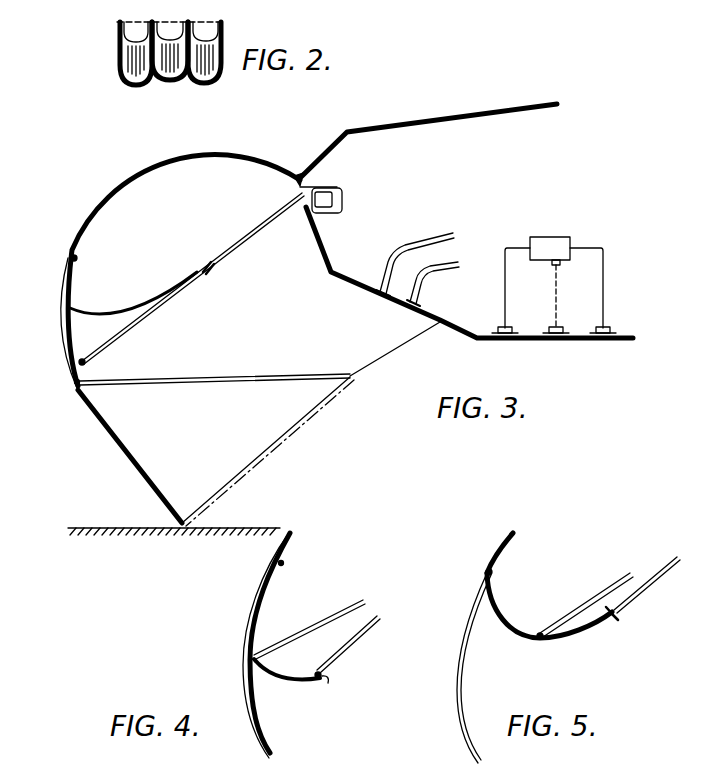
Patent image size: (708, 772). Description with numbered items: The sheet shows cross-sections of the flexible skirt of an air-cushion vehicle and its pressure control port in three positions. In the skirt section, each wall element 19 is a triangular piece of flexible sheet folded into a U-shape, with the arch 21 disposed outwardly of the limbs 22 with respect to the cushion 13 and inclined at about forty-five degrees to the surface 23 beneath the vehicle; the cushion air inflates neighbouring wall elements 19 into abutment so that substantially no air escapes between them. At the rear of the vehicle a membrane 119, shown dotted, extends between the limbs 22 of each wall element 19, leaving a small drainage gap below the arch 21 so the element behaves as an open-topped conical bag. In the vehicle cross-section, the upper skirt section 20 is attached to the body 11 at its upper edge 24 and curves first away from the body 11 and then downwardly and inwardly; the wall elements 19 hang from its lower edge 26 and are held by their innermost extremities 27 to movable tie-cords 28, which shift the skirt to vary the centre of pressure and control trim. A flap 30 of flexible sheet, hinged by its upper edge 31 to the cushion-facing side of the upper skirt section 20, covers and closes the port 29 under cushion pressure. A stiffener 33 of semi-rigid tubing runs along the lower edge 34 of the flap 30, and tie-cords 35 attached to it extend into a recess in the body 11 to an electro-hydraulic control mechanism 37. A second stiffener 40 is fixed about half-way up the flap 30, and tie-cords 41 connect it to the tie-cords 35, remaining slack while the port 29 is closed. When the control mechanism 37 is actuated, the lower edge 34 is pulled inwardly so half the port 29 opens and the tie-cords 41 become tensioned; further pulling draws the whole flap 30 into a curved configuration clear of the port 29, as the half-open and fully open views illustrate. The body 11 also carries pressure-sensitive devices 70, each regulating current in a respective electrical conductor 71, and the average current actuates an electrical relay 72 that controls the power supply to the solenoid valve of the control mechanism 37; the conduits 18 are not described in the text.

In FIG. 3, the body 11 is at (453, 117).
In FIG. 2, the cushion 13 is at (148, 12).
In FIG. 3, the cushion 13 is at (382, 441).
In FIG. 3, the conduits 18 is at (443, 243).
In FIG. 2, the wall element 19 is at (114, 74).
In FIG. 3, the wall element 19 is at (130, 470).
In FIG. 3, the upper skirt section 20 is at (208, 151).
In FIG. 4, the upper skirt section 20 is at (270, 560).
In FIG. 5, the upper skirt section 20 is at (508, 540).
In FIG. 2, the arch 21 is at (132, 76).
In FIG. 2, the limbs 22 is at (118, 45).
In FIG. 3, the surface 23 is at (105, 527).
In FIG. 3, the upper edge 24 is at (297, 175).
In FIG. 3, the lower edge 26 is at (78, 392).
In FIG. 3, the innermost extremities 27 is at (352, 371).
In FIG. 3, the tie-cords 28 is at (388, 354).
In FIG. 3, the port 29 is at (61, 352).
In FIG. 4, the port 29 is at (260, 731).
In FIG. 5, the port 29 is at (466, 727).
In FIG. 3, the flap 30 is at (74, 277).
In FIG. 4, the flap 30 is at (266, 598).
In FIG. 5, the flap 30 is at (505, 628).
In FIG. 3, the upper edge 31 is at (78, 258).
In FIG. 4, the upper edge 31 is at (283, 565).
In FIG. 5, the upper edge 31 is at (493, 571).
In FIG. 3, the stiffener 33 is at (86, 362).
In FIG. 4, the stiffener 33 is at (316, 671).
In FIG. 3, the lower edge 34 is at (75, 382).
In FIG. 4, the lower edge 34 is at (328, 694).
In FIG. 3, the tie-cords 35 is at (165, 300).
In FIG. 4, the tie-cords 35 is at (362, 634).
In FIG. 5, the tie-cords 35 is at (630, 600).
In FIG. 3, the electro-hydraulic control mechanism 37 is at (338, 193).
In FIG. 3, the second stiffener 40 is at (76, 310).
In FIG. 4, the second stiffener 40 is at (262, 655).
In FIG. 5, the second stiffener 40 is at (540, 632).
In FIG. 3, the tie-cords 41 is at (196, 280).
In FIG. 4, the tie-cords 41 is at (340, 614).
In FIG. 5, the tie-cords 41 is at (581, 604).
In FIG. 3, the pressure-sensitive devices 70 is at (525, 341).
In FIG. 3, the electrical conductor 71 is at (505, 295).
In FIG. 3, the electrical relay 72 is at (572, 240).
In FIG. 2, the membrane 119 is at (176, 7).
In FIG. 3, the membrane 119 is at (270, 448).